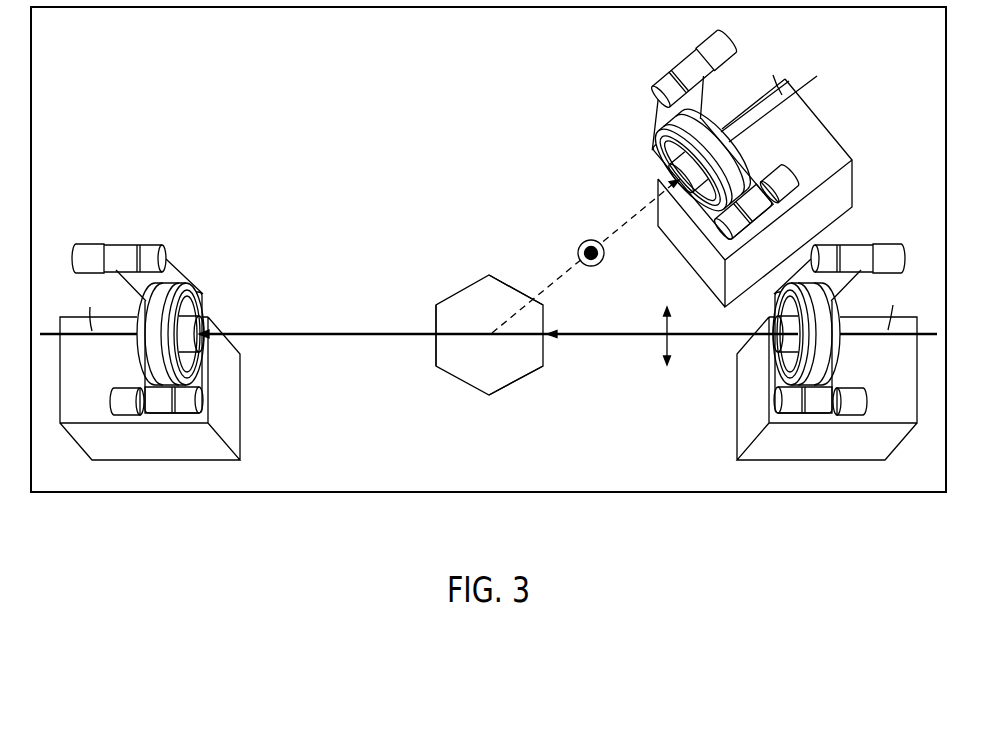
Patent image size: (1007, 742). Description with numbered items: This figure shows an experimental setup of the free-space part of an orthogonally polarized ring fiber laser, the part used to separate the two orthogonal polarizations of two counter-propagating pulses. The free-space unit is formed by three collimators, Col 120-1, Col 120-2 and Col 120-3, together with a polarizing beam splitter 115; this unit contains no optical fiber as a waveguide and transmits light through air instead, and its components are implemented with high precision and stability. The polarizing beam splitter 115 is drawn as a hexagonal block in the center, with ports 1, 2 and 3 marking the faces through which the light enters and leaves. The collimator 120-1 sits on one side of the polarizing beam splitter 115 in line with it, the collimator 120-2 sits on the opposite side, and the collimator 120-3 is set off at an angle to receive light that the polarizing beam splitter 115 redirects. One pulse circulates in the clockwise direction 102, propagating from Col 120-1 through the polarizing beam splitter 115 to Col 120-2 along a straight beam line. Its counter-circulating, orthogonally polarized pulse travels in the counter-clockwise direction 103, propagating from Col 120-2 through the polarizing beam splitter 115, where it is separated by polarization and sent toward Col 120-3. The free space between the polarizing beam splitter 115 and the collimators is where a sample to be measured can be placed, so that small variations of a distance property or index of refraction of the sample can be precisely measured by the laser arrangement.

The first port of polarizing beam splitter 1 is at (515, 380).
The second port of polarizing beam splitter 2 is at (435, 323).
The third port of polarizing beam splitter 3 is at (517, 285).
The clockwise direction 102 is at (615, 339).
The counter-clockwise direction 103 is at (627, 225).
The polarizing beam splitter 115 is at (463, 382).
The collimator 120-1 is at (787, 363).
The collimator 120-2 is at (190, 363).
The collimator 120-3 is at (670, 155).